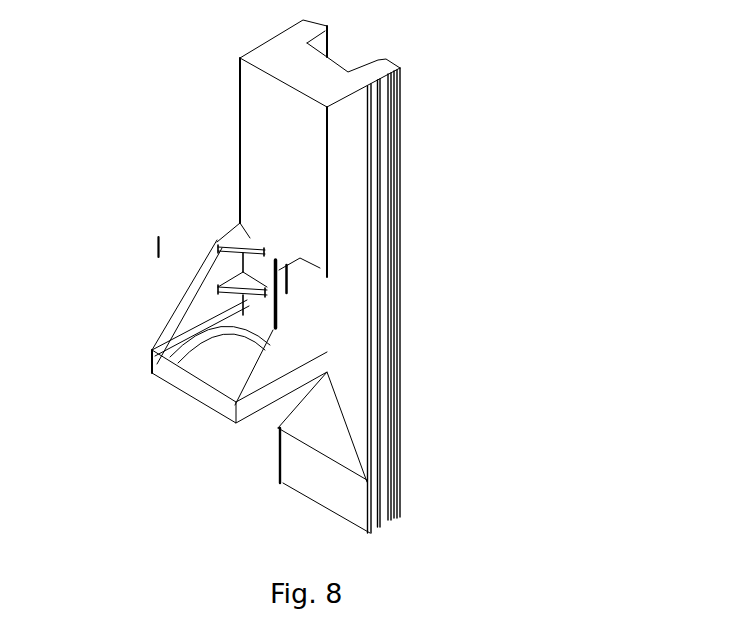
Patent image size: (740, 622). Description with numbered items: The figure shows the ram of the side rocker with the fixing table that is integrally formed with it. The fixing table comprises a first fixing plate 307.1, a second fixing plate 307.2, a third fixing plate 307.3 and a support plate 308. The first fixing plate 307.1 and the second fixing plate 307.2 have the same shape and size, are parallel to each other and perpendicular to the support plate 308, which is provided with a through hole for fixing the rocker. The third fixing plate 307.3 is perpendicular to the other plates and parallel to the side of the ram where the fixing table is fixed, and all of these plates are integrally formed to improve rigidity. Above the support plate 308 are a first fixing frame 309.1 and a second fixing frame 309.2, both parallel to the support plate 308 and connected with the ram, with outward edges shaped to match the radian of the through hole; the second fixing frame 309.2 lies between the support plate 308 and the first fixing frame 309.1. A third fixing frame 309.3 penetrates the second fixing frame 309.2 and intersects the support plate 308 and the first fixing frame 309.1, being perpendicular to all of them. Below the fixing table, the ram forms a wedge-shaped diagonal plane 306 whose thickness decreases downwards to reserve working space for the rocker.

The diagonal plane 306 is at (323, 430).
The first fixing plate 307.1 is at (183, 297).
The second fixing plate 307.2 is at (297, 333).
The third fixing plate 307.3 is at (150, 363).
The support plate 308 is at (283, 313).
The first fixing frame 309.1 is at (236, 222).
The second fixing frame 309.2 is at (217, 242).
The third fixing frame 309.3 is at (279, 270).